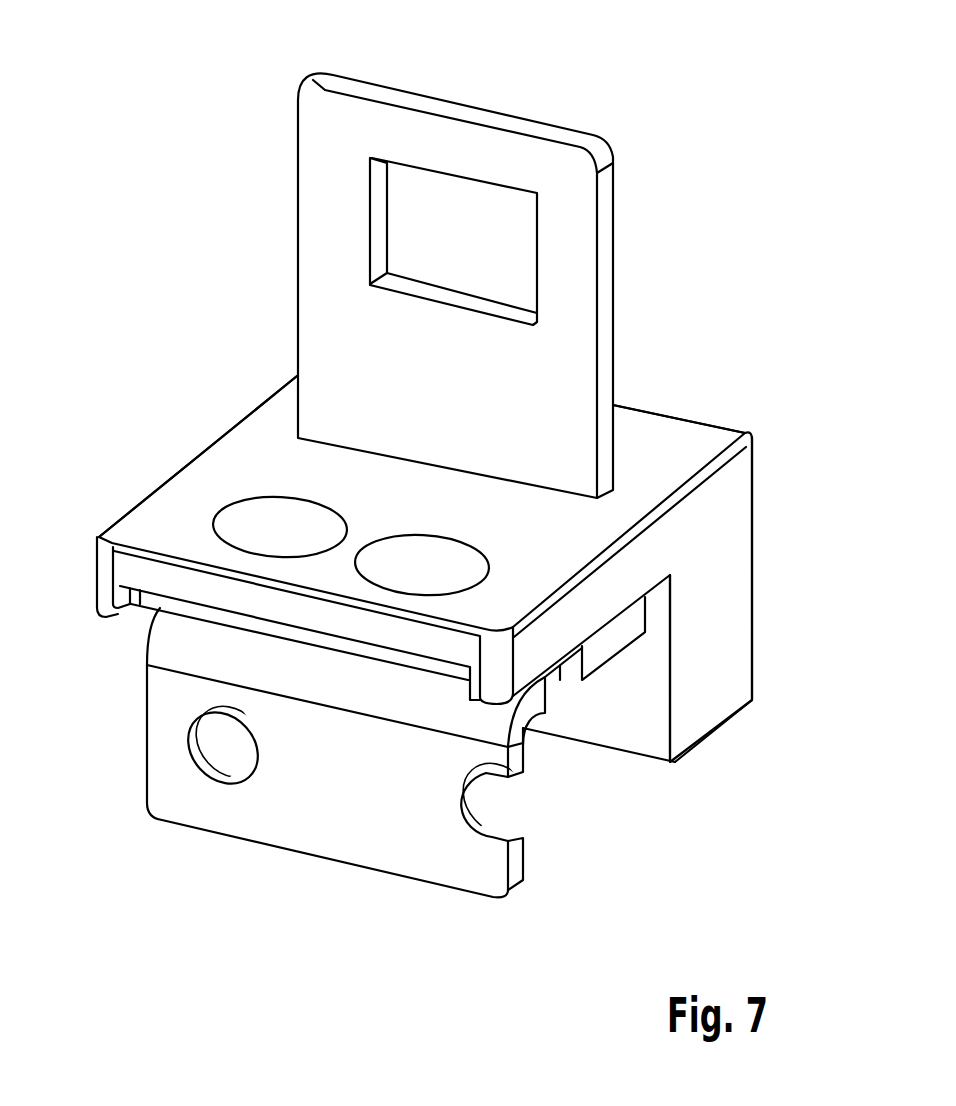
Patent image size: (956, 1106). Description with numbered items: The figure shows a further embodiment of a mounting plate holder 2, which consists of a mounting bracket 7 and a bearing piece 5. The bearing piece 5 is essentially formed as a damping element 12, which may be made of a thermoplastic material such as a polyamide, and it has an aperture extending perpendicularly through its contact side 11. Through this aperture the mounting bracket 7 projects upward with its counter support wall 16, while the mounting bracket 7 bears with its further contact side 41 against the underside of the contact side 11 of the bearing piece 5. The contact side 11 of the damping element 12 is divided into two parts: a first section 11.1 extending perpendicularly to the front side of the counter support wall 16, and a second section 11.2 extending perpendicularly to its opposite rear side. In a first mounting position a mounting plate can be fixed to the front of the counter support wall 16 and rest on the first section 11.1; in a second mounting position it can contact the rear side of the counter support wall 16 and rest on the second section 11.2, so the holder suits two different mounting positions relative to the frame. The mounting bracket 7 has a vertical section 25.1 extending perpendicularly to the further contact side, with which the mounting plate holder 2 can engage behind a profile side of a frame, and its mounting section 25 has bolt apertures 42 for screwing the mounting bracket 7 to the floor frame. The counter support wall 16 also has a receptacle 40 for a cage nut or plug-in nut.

The mounting plate holder 2 is at (651, 60).
The bearing piece 5 is at (746, 392).
The mounting bracket 7 is at (237, 880).
The contact side 11 is at (262, 445).
The first section 11.1 is at (160, 523).
The second section 11.2 is at (652, 447).
The damping element 12 is at (716, 690).
The counter support wall 16 is at (345, 143).
The mounting section 25 is at (166, 641).
The vertical section 25.1 is at (363, 842).
The receptacle 40 is at (455, 217).
The further contact side 41 is at (592, 643).
The bolt apertures 42 is at (508, 810).